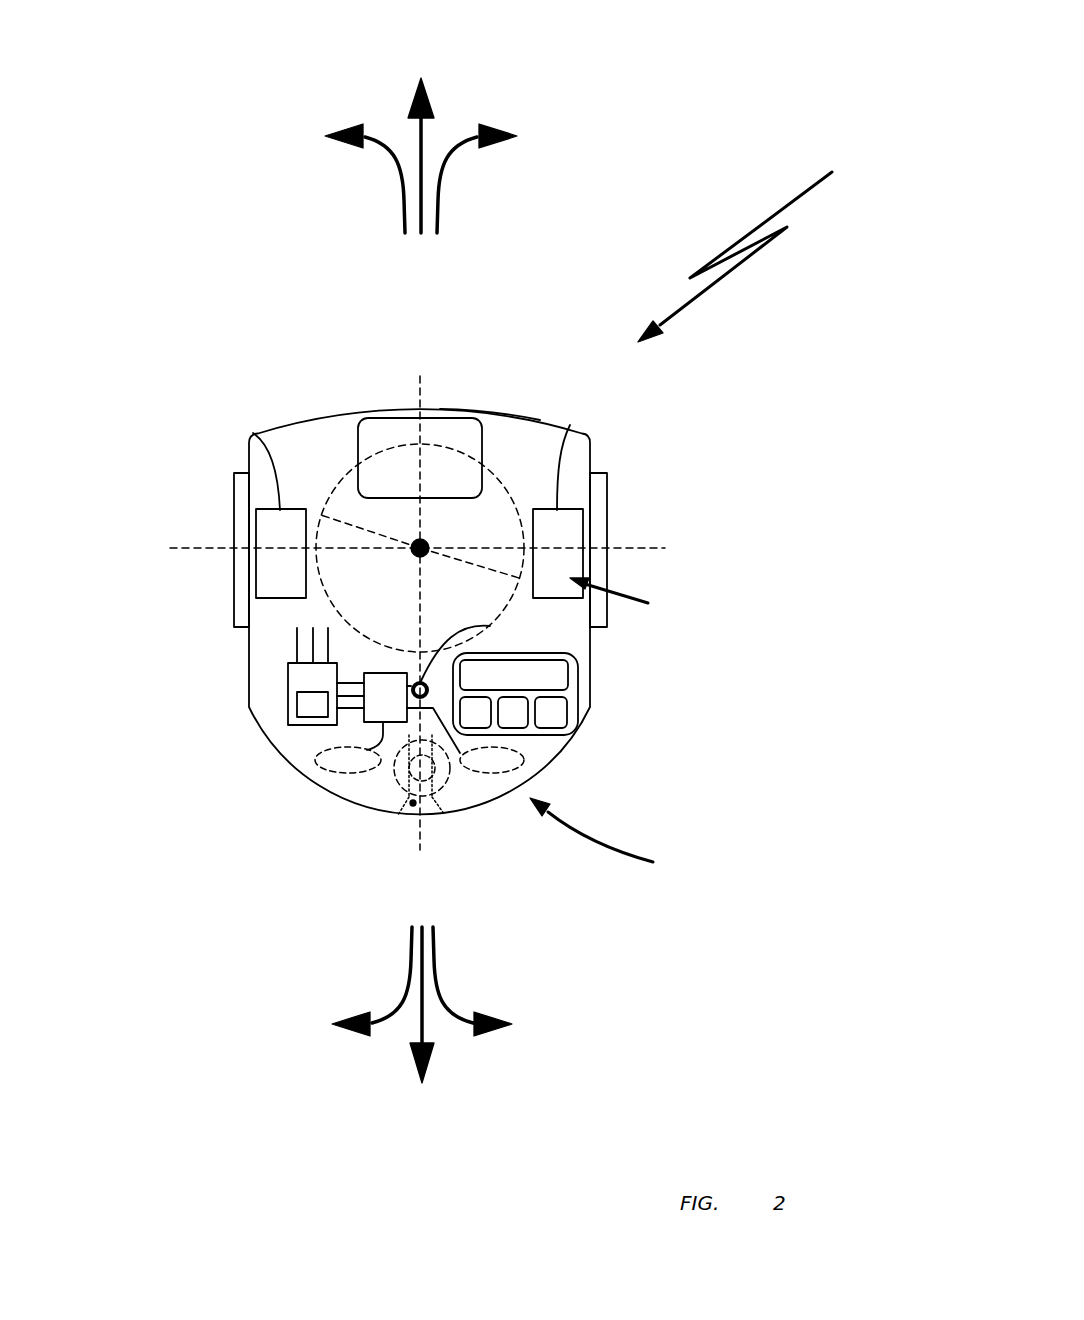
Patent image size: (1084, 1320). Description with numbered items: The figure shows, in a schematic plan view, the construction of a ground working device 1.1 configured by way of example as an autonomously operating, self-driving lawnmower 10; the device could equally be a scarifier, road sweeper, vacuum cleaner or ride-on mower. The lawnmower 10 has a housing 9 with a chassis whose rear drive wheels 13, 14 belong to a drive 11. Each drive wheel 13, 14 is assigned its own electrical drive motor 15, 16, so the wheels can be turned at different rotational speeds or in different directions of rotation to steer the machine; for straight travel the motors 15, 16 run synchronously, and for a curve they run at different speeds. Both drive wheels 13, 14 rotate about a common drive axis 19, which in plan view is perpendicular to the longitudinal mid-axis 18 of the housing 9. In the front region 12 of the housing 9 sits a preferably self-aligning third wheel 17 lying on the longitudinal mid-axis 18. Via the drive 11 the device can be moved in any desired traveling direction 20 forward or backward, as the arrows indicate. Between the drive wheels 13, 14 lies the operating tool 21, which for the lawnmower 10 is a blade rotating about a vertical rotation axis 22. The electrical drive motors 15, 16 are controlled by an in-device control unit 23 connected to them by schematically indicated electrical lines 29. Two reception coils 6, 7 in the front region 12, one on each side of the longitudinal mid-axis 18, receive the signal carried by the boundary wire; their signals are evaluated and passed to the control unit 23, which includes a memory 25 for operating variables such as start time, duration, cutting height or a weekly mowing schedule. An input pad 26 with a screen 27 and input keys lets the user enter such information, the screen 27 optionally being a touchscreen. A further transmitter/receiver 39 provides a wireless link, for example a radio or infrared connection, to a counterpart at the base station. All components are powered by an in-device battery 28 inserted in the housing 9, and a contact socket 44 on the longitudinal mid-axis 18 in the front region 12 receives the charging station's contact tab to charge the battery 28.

The ground working device 1.1 is at (753, 249).
The reception coil 6 is at (330, 771).
The reception coil 7 is at (523, 763).
The housing 9 is at (493, 420).
The lawnmower 10 is at (385, 408).
The drive 11 is at (625, 598).
The front region 12 is at (607, 838).
The rear drive wheel 13 is at (235, 518).
The rear drive wheel 14 is at (607, 478).
The electrical drive motor 15 is at (253, 433).
The electrical drive motor 16 is at (570, 425).
The third wheel 17 is at (438, 787).
The longitudinal mid-axis 18 is at (418, 377).
The drive axis 19 is at (435, 524).
The traveling direction 20 is at (430, 178).
The operating tool 21 is at (344, 526).
The vertical rotation axis 22 is at (428, 548).
The control unit 23 is at (290, 697).
The memory 25 is at (307, 707).
The input pad 26 is at (575, 705).
The screen 27 is at (567, 678).
The battery 28 is at (448, 433).
The electrical lines 29 is at (310, 645).
The transmitter/receiver 39 is at (490, 626).
The contact socket 44 is at (413, 806).